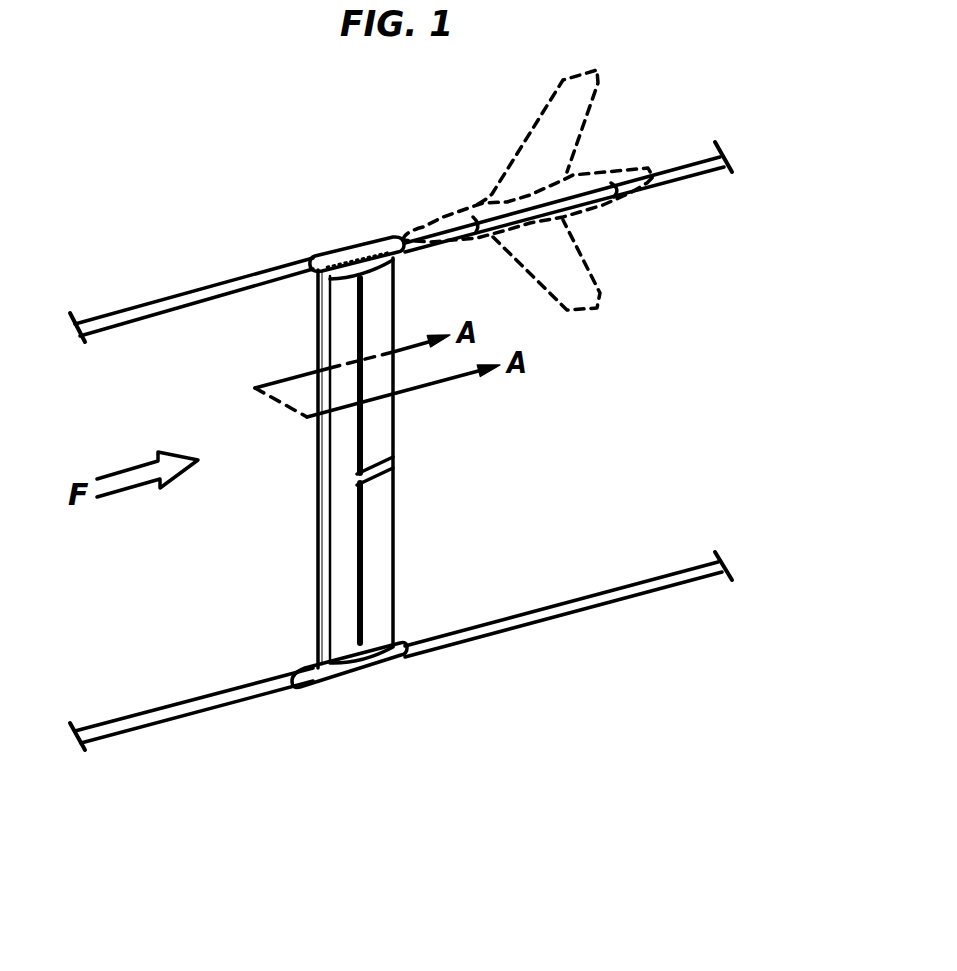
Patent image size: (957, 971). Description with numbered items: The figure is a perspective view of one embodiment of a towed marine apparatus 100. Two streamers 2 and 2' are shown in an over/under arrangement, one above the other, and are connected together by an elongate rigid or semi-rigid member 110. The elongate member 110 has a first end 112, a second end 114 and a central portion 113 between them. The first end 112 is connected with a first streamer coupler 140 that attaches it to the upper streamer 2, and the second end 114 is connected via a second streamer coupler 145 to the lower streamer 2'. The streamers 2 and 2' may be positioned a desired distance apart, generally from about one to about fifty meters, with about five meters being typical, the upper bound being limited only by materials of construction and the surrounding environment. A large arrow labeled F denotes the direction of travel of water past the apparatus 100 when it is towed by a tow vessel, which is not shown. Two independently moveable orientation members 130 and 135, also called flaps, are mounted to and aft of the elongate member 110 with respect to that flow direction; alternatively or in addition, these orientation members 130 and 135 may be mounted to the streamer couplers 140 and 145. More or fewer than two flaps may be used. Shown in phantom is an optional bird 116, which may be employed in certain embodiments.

The apparatus 100 is at (292, 198).
The streamer 2 is at (401, 204).
The streamer 2' is at (401, 621).
The bird 116 is at (513, 157).
The first streamer coupler 140 is at (353, 242).
The second streamer coupler 145 is at (355, 680).
The elongate rigid or semi-rigid member 110 is at (313, 500).
The first end 112 is at (337, 287).
The second end 114 is at (337, 653).
The orientation member 130 is at (383, 414).
The central portion 113 is at (390, 467).
The orientation member 135 is at (385, 556).